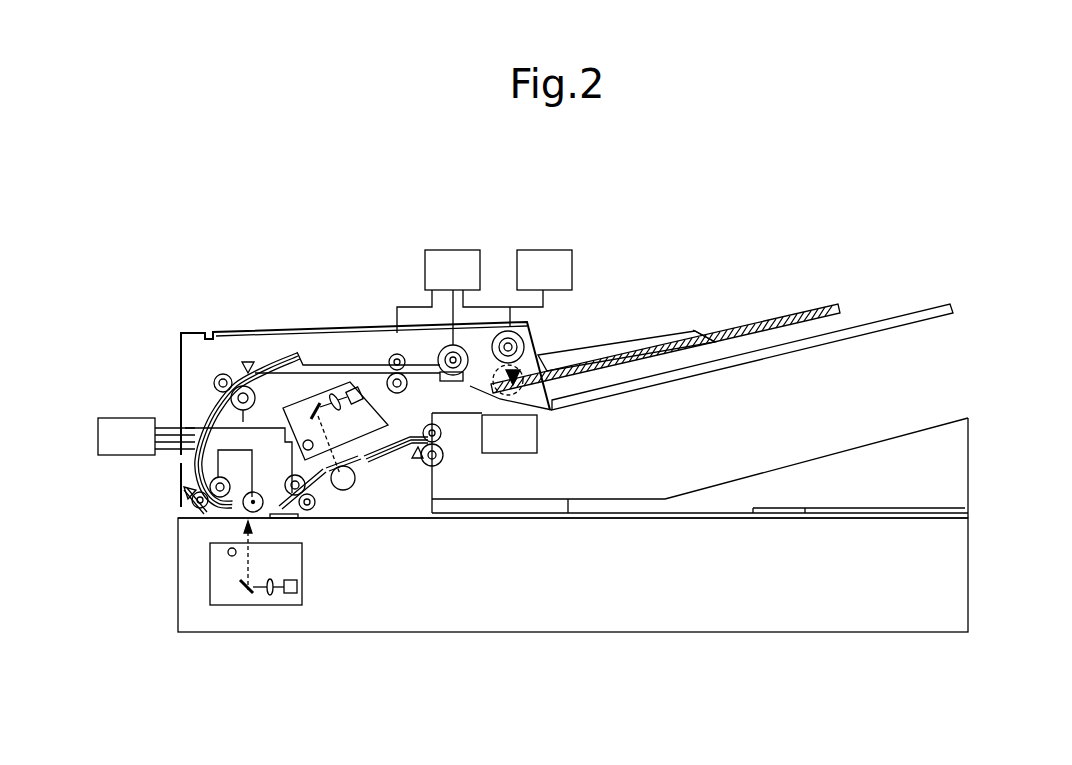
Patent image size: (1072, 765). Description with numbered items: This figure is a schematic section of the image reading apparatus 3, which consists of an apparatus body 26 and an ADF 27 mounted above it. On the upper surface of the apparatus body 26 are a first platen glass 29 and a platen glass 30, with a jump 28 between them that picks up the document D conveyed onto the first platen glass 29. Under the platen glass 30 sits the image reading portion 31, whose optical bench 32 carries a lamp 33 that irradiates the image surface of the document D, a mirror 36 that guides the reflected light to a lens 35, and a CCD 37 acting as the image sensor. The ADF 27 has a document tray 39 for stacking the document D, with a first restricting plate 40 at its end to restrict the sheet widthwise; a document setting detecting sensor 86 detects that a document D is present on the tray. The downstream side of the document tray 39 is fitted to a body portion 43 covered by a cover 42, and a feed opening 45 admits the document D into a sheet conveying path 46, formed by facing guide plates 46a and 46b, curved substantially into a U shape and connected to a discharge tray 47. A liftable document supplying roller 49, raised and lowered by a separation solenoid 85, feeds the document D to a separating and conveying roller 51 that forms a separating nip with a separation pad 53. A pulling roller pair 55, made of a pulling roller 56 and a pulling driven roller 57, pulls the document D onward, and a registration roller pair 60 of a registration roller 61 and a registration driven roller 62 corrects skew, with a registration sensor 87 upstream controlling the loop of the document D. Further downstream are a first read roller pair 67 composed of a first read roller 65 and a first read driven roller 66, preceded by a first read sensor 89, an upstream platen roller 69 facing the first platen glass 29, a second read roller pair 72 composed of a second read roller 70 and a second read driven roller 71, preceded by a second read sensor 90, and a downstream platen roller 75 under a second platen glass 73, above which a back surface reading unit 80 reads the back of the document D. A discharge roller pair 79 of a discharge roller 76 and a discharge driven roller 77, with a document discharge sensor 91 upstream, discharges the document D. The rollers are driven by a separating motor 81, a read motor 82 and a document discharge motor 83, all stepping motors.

The image reading apparatus 3 is at (868, 190).
The apparatus body 26 is at (987, 532).
The ADF 27 is at (182, 332).
The jump 28 is at (304, 522).
The first platen glass 29 is at (246, 530).
The platen glass 30 is at (556, 521).
The image reading portion 31 is at (557, 633).
The optical bench 32 is at (302, 603).
The lamp 33 is at (231, 548).
The lens 35 is at (270, 597).
The mirror 36 is at (245, 592).
The CCD 37 is at (290, 596).
The document tray 39 is at (954, 308).
The first restricting plate 40 is at (695, 329).
The cover 42 is at (308, 324).
The body portion 43 is at (383, 326).
The feed opening 45 is at (542, 370).
The sheet conveying path 46 is at (204, 402).
The guide plate 46a is at (212, 378).
The guide plate 46b is at (207, 418).
The discharge tray 47 is at (600, 499).
The document supplying roller 49 is at (522, 338).
The separating and conveying roller 51 is at (467, 356).
The separation pad 53 is at (447, 382).
The pulling roller pair 55 is at (382, 347).
The pulling roller 56 is at (392, 373).
The pulling driven roller 57 is at (398, 353).
The registration roller pair 60 is at (220, 349).
The registration roller 61 is at (249, 362).
The registration driven roller 62 is at (213, 376).
The first read roller 65 is at (212, 481).
The first read driven roller 66 is at (198, 509).
The first read roller pair 67 is at (207, 518).
The upstream platen roller 69 is at (257, 493).
The second read roller 70 is at (316, 490).
The second read driven roller 71 is at (310, 514).
The second read roller pair 72 is at (296, 502).
The second platen glass 73 is at (355, 466).
The downstream platen roller 75 is at (356, 480).
The discharge roller 76 is at (441, 431).
The discharge driven roller 77 is at (441, 462).
The discharge roller pair 79 is at (452, 442).
The back surface reading unit 80 is at (317, 385).
The separating motor 81 is at (455, 249).
The read motor 82 is at (98, 437).
The document discharge motor 83 is at (537, 432).
The separation solenoid 85 is at (548, 249).
The document setting detecting sensor 86 is at (518, 366).
The registration sensor 87 is at (238, 345).
The first read sensor 89 is at (185, 497).
The second read sensor 90 is at (288, 522).
The document discharge sensor 91 is at (437, 464).
The document D is at (790, 322).